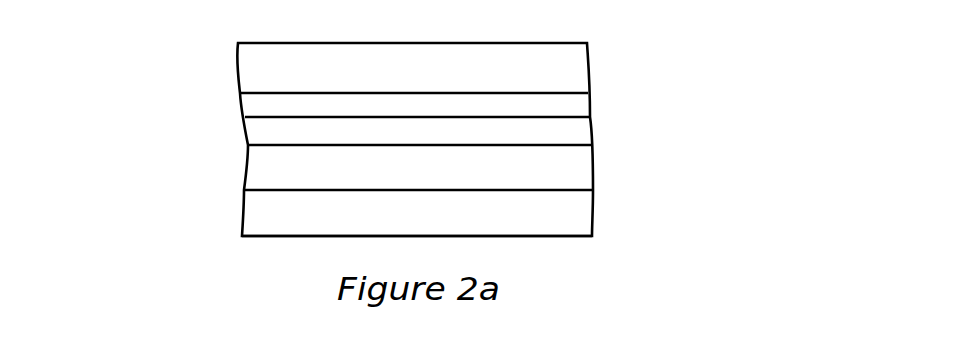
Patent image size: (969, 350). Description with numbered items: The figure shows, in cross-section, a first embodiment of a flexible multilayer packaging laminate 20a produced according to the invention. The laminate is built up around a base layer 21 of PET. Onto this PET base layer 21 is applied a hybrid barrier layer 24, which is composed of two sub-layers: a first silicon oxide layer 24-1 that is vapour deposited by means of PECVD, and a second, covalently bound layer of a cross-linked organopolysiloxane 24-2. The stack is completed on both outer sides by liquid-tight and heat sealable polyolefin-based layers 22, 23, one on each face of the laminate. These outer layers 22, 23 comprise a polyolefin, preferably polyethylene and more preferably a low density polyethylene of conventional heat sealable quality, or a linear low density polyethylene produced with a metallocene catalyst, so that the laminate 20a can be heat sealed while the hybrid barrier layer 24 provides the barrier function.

The flexible multilayer packaging laminate 20a is at (317, 139).
The outer liquid-tight and heat sealable polyolefin-based layer 23 is at (555, 70).
The hybrid barrier layer 24 is at (782, 65).
The cross-linked organopolysiloxane layer 24-2 is at (570, 107).
The silicon oxide layer 24-1 is at (568, 133).
The base layer 21 is at (562, 173).
The outer liquid-tight and heat sealable polyolefin-based layer 22 is at (552, 215).